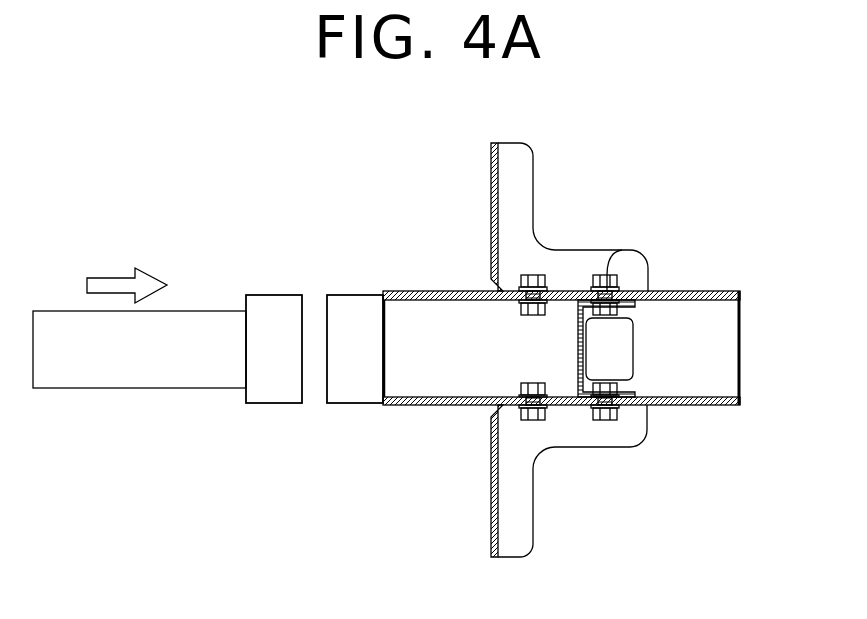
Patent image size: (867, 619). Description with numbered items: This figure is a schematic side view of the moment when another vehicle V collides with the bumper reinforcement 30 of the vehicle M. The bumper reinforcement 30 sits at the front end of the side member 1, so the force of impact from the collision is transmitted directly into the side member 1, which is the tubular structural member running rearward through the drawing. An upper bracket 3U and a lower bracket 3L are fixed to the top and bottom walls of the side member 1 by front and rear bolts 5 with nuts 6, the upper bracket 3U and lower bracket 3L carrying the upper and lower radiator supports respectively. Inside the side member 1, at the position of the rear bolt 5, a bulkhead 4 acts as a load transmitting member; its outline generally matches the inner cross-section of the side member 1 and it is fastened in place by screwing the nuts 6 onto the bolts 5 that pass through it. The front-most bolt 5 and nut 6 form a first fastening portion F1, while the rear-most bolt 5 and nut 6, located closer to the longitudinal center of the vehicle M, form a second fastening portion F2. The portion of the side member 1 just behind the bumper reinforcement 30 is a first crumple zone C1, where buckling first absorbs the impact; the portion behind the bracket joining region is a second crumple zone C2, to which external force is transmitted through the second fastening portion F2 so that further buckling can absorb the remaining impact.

The another vehicle V is at (276, 392).
The bumper reinforcement 30 is at (350, 385).
The side member 1 is at (415, 385).
The upper bracket 3U is at (520, 188).
The lower bracket 3L is at (517, 535).
The bulkhead 4 is at (627, 353).
The bolt 5 is at (518, 286).
The nut 6 is at (580, 323).
The vehicle M is at (647, 120).
The first fastening portion F1 is at (530, 264).
The second fastening portion F2 is at (634, 271).
The first crumple zone C1 is at (417, 281).
The second crumple zone C2 is at (706, 279).